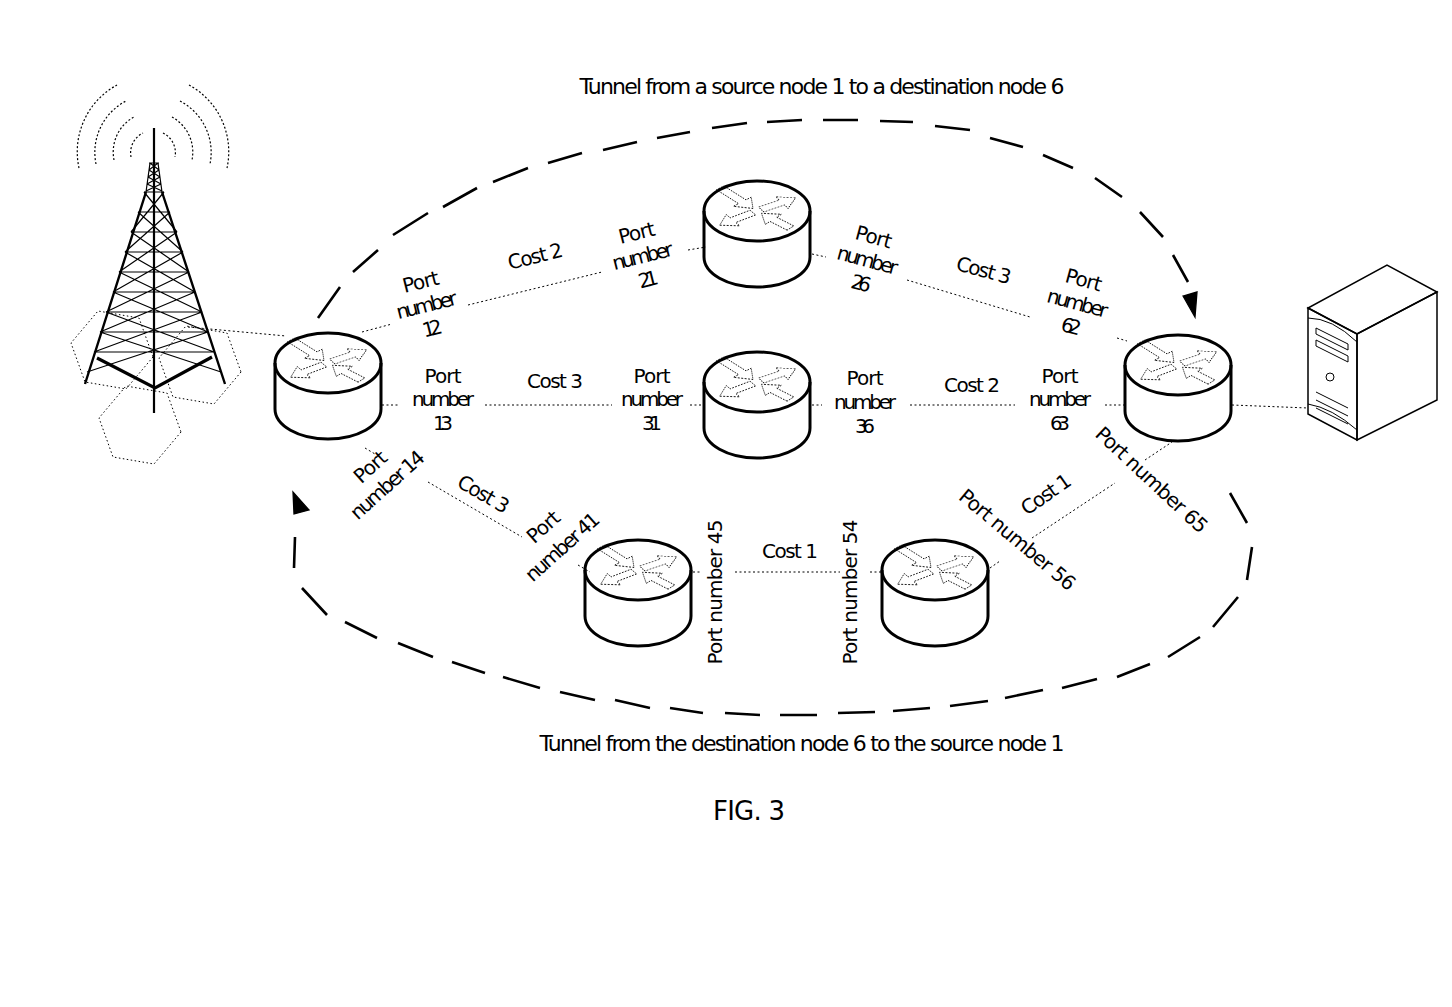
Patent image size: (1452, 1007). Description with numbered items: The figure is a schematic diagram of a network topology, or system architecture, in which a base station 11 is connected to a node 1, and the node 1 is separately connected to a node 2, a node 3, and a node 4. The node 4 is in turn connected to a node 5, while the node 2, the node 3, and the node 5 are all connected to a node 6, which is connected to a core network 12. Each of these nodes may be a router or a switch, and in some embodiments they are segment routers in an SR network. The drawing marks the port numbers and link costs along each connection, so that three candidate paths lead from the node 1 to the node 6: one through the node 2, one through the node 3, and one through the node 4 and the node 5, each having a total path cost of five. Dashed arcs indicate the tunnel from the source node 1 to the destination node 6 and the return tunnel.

The base station 11 is at (156, 301).
The core network 12 is at (1372, 386).
The node 1 is at (325, 405).
The node 2 is at (757, 254).
The node 3 is at (757, 424).
The node 4 is at (638, 613).
The node 5 is at (935, 613).
The node 6 is at (1186, 409).